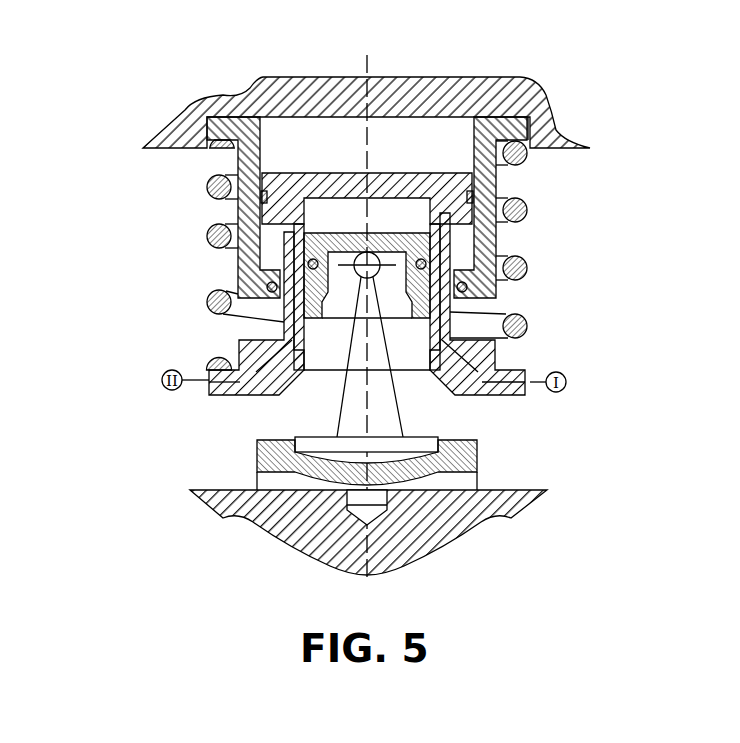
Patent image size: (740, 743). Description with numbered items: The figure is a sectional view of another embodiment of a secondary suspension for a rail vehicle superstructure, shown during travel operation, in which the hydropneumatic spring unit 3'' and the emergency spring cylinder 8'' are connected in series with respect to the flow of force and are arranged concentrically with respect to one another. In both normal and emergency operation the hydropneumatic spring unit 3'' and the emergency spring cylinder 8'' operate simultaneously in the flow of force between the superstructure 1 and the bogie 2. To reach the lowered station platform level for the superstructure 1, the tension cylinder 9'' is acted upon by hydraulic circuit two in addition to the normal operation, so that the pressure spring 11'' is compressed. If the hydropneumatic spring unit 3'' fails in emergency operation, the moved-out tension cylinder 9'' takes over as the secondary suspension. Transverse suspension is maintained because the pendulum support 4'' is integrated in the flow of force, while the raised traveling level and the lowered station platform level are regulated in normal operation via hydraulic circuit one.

The superstructure 1 is at (517, 92).
The bogie 2 is at (488, 510).
The hydropneumatic spring unit 3'' is at (398, 334).
The pendulum support 4'' is at (323, 352).
The emergency spring cylinder 8'' is at (186, 251).
The tension cylinder 9'' is at (329, 207).
The pressure spring 11'' is at (530, 239).